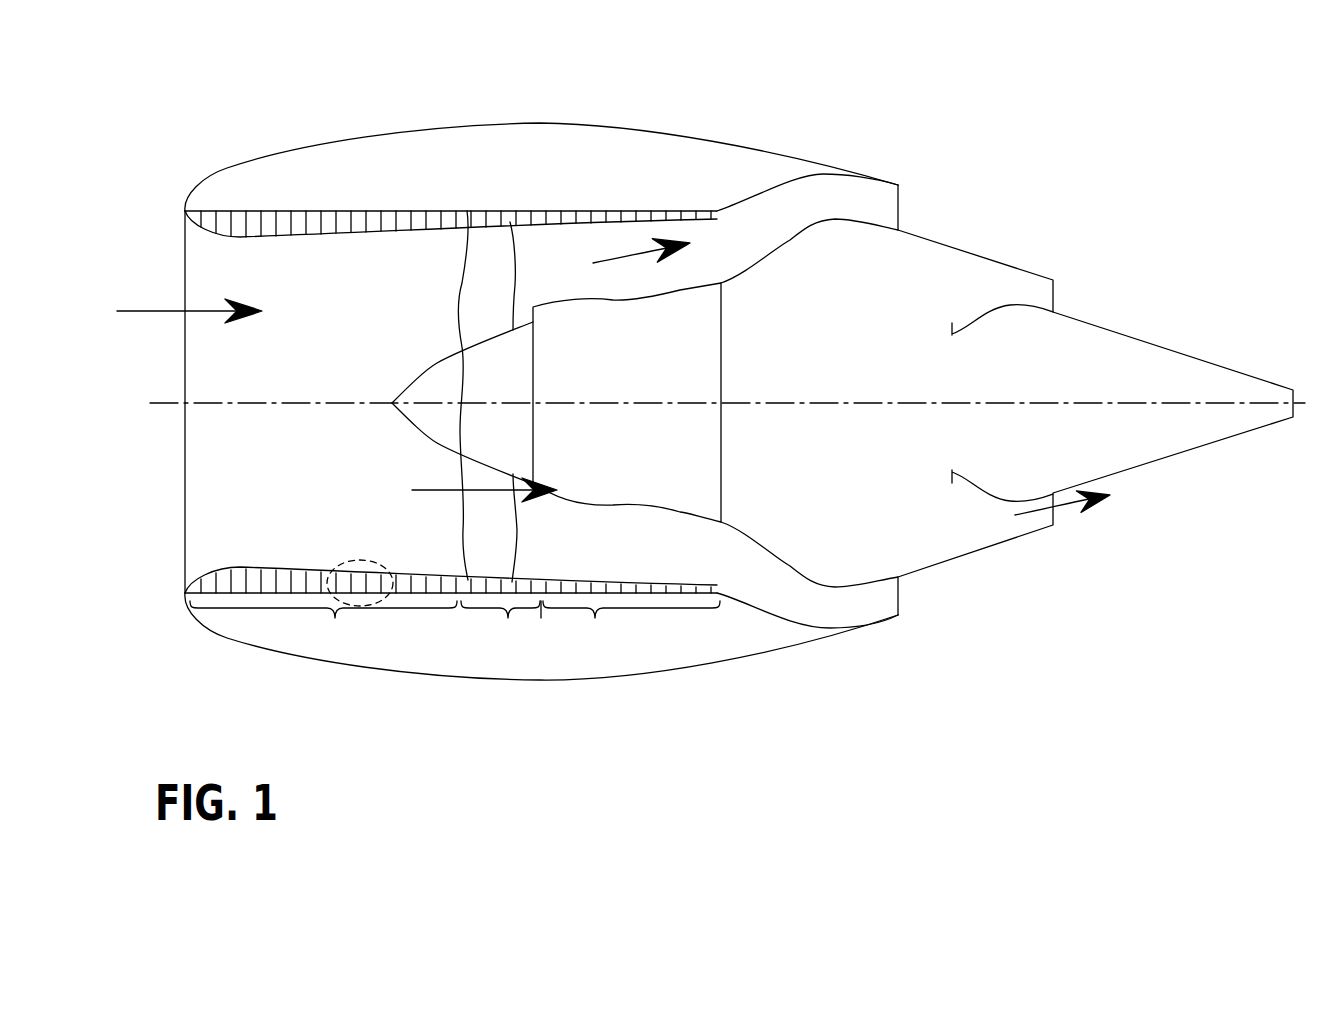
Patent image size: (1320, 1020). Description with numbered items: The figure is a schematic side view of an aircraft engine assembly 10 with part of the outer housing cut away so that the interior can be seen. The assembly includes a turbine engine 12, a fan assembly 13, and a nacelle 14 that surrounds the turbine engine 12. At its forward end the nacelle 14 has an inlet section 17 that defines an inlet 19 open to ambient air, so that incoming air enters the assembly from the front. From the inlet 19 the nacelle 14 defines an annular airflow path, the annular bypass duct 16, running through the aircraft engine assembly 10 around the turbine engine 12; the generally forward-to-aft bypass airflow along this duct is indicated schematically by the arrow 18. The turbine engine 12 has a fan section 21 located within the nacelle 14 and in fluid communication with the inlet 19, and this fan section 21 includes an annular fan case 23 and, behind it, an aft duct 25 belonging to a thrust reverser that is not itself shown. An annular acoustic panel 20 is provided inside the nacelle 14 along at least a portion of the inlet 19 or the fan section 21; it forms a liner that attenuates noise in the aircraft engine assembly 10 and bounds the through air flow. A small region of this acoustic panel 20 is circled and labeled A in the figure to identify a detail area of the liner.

The aircraft engine assembly 10 is at (210, 143).
The turbine engine 12 is at (617, 330).
The fan assembly 13 is at (483, 243).
The nacelle 14 is at (307, 147).
The annular bypass duct 16 is at (547, 252).
The inlet section 17 is at (323, 625).
The arrow 18 is at (632, 258).
The inlet 19 is at (228, 450).
The annular acoustic panel 20 is at (243, 210).
The fan section 21 is at (545, 622).
The annular fan case 23 is at (500, 626).
The aft duct 25 is at (631, 626).
The detail region A is at (330, 572).